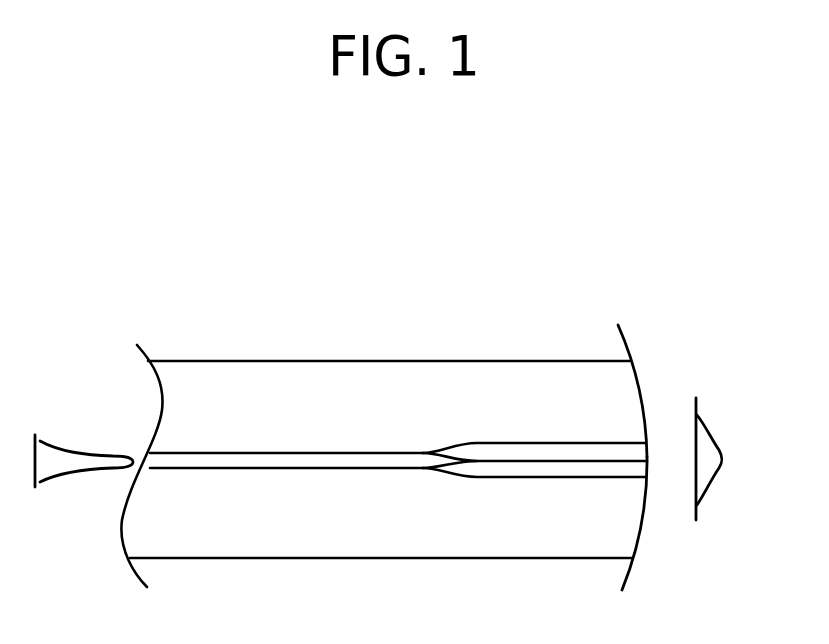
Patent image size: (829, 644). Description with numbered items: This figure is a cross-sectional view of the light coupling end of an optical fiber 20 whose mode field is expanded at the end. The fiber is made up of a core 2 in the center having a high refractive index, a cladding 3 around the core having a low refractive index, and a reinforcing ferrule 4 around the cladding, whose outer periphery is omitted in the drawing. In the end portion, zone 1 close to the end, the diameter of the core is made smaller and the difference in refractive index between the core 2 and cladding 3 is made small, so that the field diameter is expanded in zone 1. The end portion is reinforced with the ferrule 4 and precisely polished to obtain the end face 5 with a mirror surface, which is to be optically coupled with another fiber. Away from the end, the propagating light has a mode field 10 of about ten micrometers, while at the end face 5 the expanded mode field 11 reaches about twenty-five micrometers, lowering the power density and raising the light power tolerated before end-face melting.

The zone 1 is at (522, 448).
The core 2 is at (246, 461).
The cladding 3 is at (294, 378).
The reinforcing ferrule 4 is at (622, 338).
The end face 5 is at (638, 545).
The mode field 10 is at (78, 447).
The mode field 11 is at (713, 430).
The output optical fiber 20 is at (428, 282).